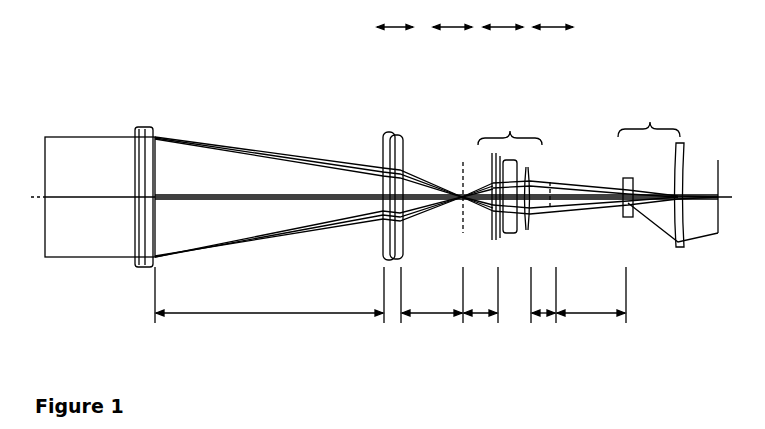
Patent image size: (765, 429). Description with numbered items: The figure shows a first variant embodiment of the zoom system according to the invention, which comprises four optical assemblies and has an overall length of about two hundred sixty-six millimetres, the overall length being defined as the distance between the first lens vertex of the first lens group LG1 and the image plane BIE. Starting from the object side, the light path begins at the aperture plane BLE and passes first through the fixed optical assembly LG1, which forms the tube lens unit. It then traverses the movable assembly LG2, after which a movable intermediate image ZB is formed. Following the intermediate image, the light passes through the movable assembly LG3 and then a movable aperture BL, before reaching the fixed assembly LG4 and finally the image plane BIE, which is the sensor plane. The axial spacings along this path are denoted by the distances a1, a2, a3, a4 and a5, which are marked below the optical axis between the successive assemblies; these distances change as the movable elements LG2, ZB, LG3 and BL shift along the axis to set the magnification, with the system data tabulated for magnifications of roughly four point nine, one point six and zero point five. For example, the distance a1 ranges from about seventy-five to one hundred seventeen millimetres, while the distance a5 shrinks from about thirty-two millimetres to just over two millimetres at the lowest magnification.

The aperture plane BLE is at (50, 137).
The first lens group LG1 is at (147, 122).
The second optical assembly LG2 is at (392, 122).
The intermediate image ZB is at (462, 145).
The third optical assembly LG3 is at (508, 120).
The aperture BL is at (551, 170).
The fourth optical assembly LG4 is at (650, 112).
The image plane BIE is at (715, 145).
The first air distance a1 is at (269, 339).
The second air distance a2 is at (432, 339).
The third air distance a3 is at (480, 339).
The fourth air distance a4 is at (547, 339).
The fifth air distance a5 is at (591, 339).